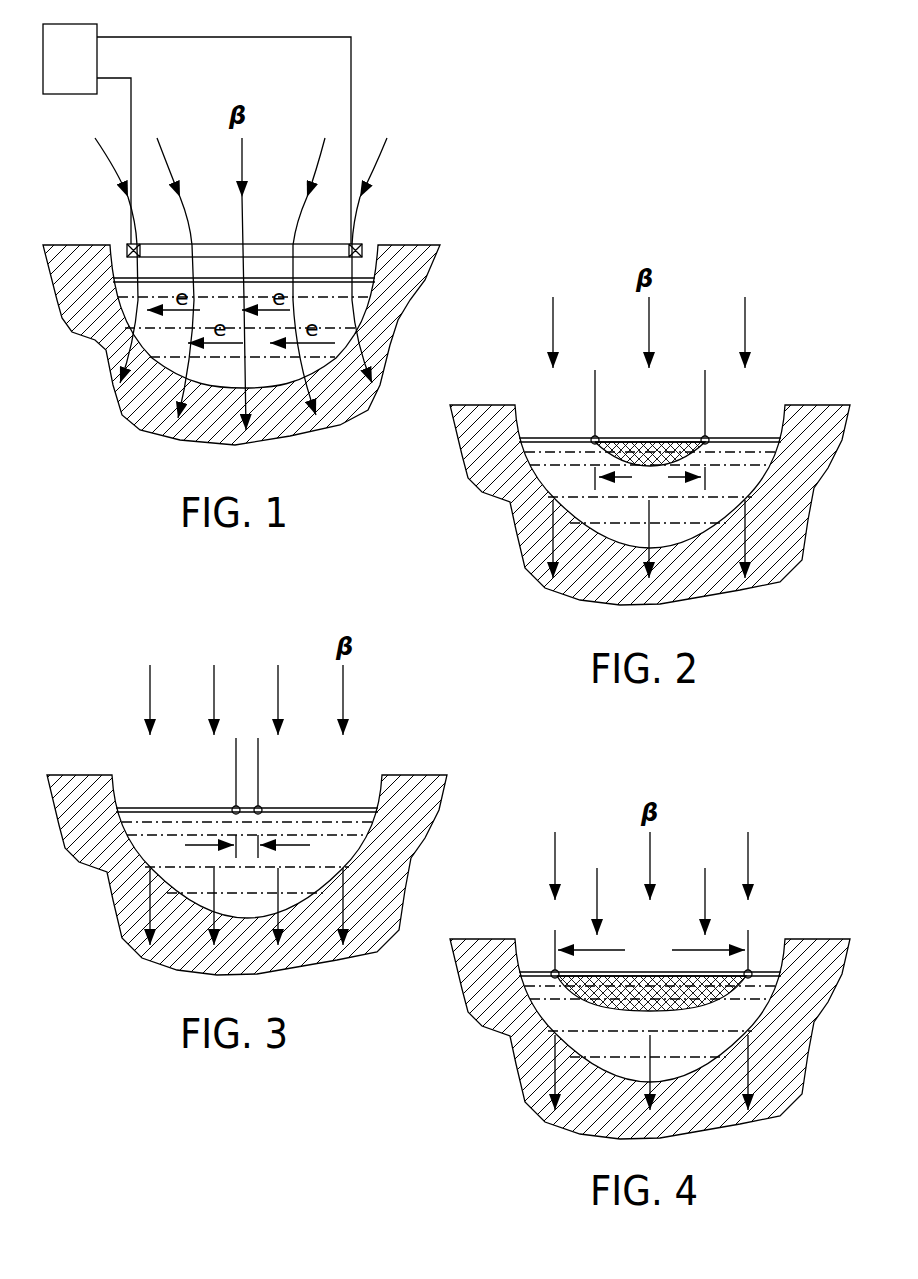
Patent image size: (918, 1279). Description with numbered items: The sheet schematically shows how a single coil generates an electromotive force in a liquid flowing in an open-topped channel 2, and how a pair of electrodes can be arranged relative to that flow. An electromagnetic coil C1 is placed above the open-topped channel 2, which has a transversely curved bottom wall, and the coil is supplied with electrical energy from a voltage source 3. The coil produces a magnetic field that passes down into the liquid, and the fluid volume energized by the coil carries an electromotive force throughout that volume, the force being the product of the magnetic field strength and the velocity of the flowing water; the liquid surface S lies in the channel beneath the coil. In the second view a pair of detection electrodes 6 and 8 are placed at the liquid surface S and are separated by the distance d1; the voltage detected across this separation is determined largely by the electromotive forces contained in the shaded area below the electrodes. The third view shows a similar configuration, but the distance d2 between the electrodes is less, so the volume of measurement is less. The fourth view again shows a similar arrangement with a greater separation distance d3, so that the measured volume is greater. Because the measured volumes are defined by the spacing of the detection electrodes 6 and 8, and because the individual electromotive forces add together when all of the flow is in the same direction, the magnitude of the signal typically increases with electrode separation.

In FIG. 1, the open-topped channel 2 is at (365, 300).
In FIG. 2, the open-topped channel 2 is at (535, 480).
In FIG. 3, the open-topped channel 2 is at (255, 875).
In FIG. 4, the open-topped channel 2 is at (645, 1039).
In FIG. 1, the voltage source 3 is at (98, 31).
In FIG. 1, the electromagnetic coil C1 is at (358, 246).
In FIG. 1, the liquid surface S is at (258, 363).
In FIG. 2, the liquid surface S is at (690, 510).
In FIG. 3, the liquid surface S is at (247, 900).
In FIG. 4, the liquid surface S is at (650, 1066).
In FIG. 2, the detection electrode 6 is at (590, 440).
In FIG. 3, the detection electrode 6 is at (202, 776).
In FIG. 2, the detection electrode 8 is at (710, 440).
In FIG. 3, the detection electrode 8 is at (289, 776).
In FIG. 2, the distance between electrodes d1 is at (650, 478).
In FIG. 3, the distance between electrodes d2 is at (231, 847).
In FIG. 4, the distance between electrodes d3 is at (651, 951).